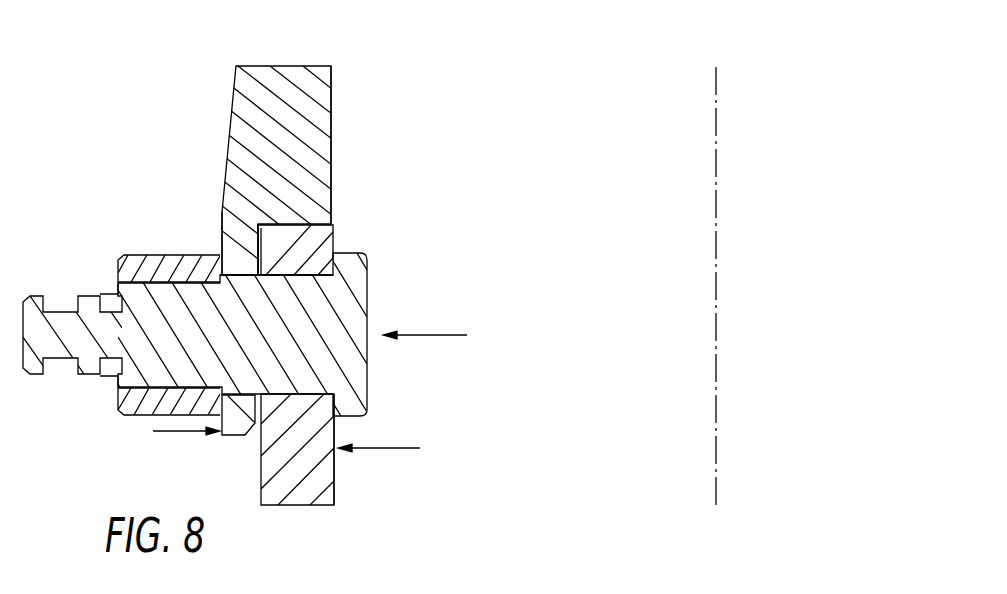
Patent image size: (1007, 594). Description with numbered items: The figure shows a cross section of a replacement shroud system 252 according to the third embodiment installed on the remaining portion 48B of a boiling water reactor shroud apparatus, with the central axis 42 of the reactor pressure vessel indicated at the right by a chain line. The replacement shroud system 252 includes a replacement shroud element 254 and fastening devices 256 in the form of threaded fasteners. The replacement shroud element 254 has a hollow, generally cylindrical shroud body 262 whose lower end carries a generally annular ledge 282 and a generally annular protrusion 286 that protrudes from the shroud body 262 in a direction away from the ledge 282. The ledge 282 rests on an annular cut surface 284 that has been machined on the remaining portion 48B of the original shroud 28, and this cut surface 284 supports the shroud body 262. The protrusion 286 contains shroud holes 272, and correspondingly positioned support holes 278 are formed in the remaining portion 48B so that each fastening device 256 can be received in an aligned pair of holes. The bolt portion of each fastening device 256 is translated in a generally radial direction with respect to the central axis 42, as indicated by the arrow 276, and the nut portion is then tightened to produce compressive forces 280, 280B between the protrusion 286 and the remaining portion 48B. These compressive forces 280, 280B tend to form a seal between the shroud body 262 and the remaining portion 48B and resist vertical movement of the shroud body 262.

The shroud 28 is at (335, 493).
The central axis 42 is at (716, 158).
The remaining portion 48B is at (350, 474).
The replacement shroud system 252 is at (325, 138).
The replacement shroud element 254 is at (337, 72).
The fastening devices 256 is at (350, 255).
The shroud body 262 is at (333, 148).
The shroud holes 272 is at (238, 283).
The arrow 276 is at (435, 335).
The support holes 278 is at (297, 276).
The compressive forces 280 is at (155, 433).
The compressive force 280B is at (388, 448).
The ledge 282 is at (336, 225).
The cut surface 284 is at (280, 217).
The protrusion 286 is at (242, 436).